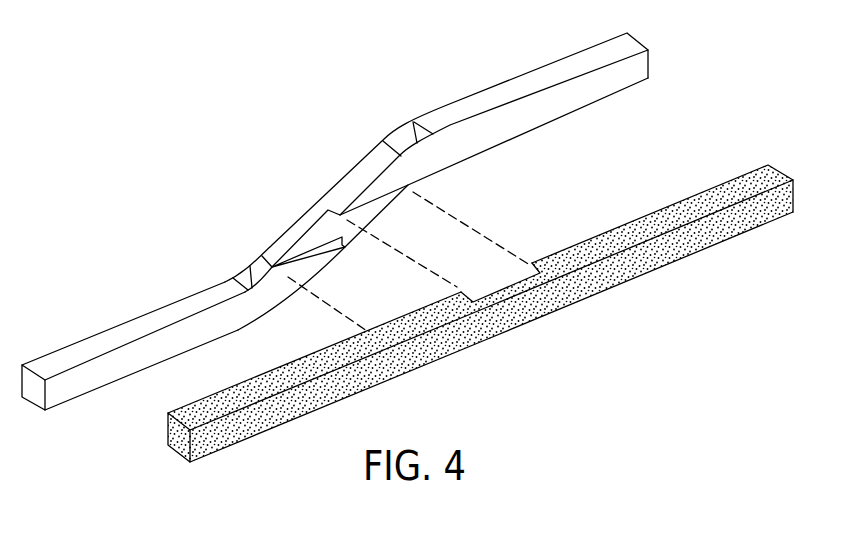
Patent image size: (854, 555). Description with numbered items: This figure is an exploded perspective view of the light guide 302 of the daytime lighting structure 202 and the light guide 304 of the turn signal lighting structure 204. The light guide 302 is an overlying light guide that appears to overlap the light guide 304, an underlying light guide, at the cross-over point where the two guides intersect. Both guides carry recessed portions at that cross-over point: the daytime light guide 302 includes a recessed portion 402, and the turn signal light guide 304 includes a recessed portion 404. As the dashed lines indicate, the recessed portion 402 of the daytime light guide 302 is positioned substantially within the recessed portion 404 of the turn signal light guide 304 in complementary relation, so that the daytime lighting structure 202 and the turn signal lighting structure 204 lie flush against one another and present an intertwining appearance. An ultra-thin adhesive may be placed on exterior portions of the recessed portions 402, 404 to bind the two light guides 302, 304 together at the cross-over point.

The daytime lighting structure 202 is at (180, 438).
The light guide 302 is at (768, 165).
The recessed portion 402 is at (499, 287).
The turn signal lighting structure 204 is at (35, 392).
The light guide 304 is at (627, 33).
The recessed portion 404 is at (296, 227).